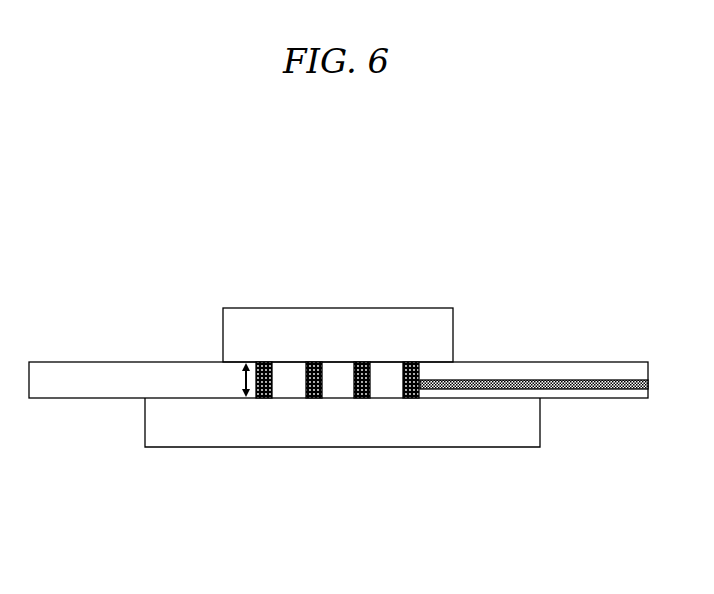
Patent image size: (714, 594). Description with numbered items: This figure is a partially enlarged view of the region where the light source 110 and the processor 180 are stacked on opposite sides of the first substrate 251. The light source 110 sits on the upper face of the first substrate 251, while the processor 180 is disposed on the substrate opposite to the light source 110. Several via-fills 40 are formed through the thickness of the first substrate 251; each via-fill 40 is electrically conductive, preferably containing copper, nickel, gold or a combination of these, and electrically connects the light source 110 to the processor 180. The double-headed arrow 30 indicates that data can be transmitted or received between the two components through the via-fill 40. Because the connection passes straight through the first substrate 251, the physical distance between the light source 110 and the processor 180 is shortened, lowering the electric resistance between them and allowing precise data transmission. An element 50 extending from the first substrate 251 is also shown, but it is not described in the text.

The first substrate 251 is at (78, 398).
The light source 110 is at (223, 332).
The processor 180 is at (418, 447).
The via-fill 40 is at (320, 398).
The flexible strip / cable 50 is at (593, 389).
The data transmission path 30 is at (234, 381).